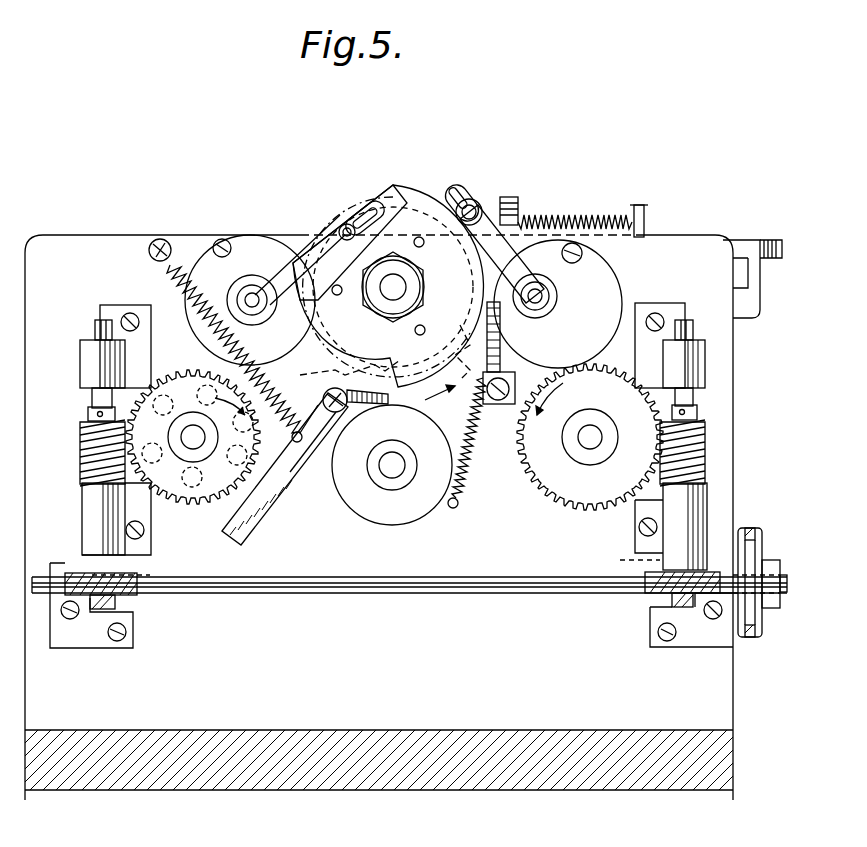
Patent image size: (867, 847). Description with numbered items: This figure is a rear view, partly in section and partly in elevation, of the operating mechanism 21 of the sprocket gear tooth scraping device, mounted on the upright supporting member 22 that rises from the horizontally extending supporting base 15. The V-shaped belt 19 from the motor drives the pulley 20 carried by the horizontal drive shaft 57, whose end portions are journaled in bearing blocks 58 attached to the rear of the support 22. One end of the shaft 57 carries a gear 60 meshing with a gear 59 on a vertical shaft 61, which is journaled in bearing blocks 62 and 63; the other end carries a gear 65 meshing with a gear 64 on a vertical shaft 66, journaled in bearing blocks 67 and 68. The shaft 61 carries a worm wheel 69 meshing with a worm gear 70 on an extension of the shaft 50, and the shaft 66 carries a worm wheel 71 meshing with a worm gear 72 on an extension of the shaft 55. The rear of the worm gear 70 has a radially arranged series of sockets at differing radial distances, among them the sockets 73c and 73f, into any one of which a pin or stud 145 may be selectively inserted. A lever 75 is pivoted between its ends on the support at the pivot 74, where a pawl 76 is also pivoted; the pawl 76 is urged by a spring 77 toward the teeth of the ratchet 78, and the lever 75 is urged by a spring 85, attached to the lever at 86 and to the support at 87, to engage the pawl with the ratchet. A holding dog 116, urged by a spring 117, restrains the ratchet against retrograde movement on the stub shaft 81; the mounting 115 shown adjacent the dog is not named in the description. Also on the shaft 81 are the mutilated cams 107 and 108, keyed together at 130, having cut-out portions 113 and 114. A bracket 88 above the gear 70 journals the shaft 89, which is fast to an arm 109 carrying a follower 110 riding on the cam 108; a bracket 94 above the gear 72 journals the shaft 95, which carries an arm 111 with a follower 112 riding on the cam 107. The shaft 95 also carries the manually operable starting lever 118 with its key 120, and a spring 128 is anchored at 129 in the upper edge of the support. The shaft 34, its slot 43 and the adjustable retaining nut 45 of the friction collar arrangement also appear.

The supporting base 15 is at (635, 775).
The V-shaped belt 19 is at (752, 530).
The pulley 20 is at (770, 615).
The operating mechanism 21 is at (338, 576).
The upright supporting member 22 is at (715, 697).
The shaft 34 is at (394, 478).
The slot 43 is at (385, 525).
The nut 45 is at (405, 462).
The shaft 50 is at (181, 435).
The shaft 55 is at (598, 448).
The drive shaft 57 is at (448, 593).
The bearing blocks 58 is at (60, 562).
The gear 59 is at (137, 590).
The gear 60 is at (140, 565).
The shaft 61 is at (95, 325).
The bearing block 62 is at (82, 500).
The bearing block 63 is at (90, 355).
The gear 64 is at (645, 590).
The gear 65 is at (624, 559).
The shaft 66 is at (695, 398).
The bearing block 67 is at (705, 355).
The bearing block 68 is at (703, 500).
The worm wheel 69 is at (85, 440).
The worm gear 70 is at (188, 503).
The worm wheel 71 is at (705, 450).
The worm gear 72 is at (555, 500).
The socket 73c is at (200, 392).
The socket 73f is at (182, 478).
The pivot 74 is at (340, 410).
The lever 75 is at (262, 502).
The pawl 76 is at (385, 404).
The spring 77 is at (310, 455).
The ratchet 78 is at (310, 375).
The stub shaft 81 is at (398, 292).
The spring 85 is at (170, 270).
The attachment point 86 is at (294, 442).
The attachment point 87 is at (162, 239).
The bearing plate or bracket 88 is at (232, 236).
The shaft 89 is at (254, 292).
The bearing plate or bracket 94 is at (600, 282).
The shaft 95 is at (578, 265).
The mutilated cam 107 is at (398, 186).
The mutilated cam 108 is at (280, 310).
The arm 109 is at (318, 248).
The cam roller or follower 110 is at (350, 224).
The arm 111 is at (498, 210).
The cam roller or follower 112 is at (473, 198).
The cut-out portion 113 is at (375, 200).
The cut-out portion 114 is at (300, 260).
The screw 115 is at (494, 404).
The latch or holding dog 116 is at (538, 312).
The spring 117 is at (470, 462).
The starting lever 118 is at (745, 292).
The key 120 is at (748, 240).
The spring 128 is at (560, 214).
The anchor 129 is at (642, 212).
The key 130 is at (415, 331).
The pin or stud 145 is at (238, 452).